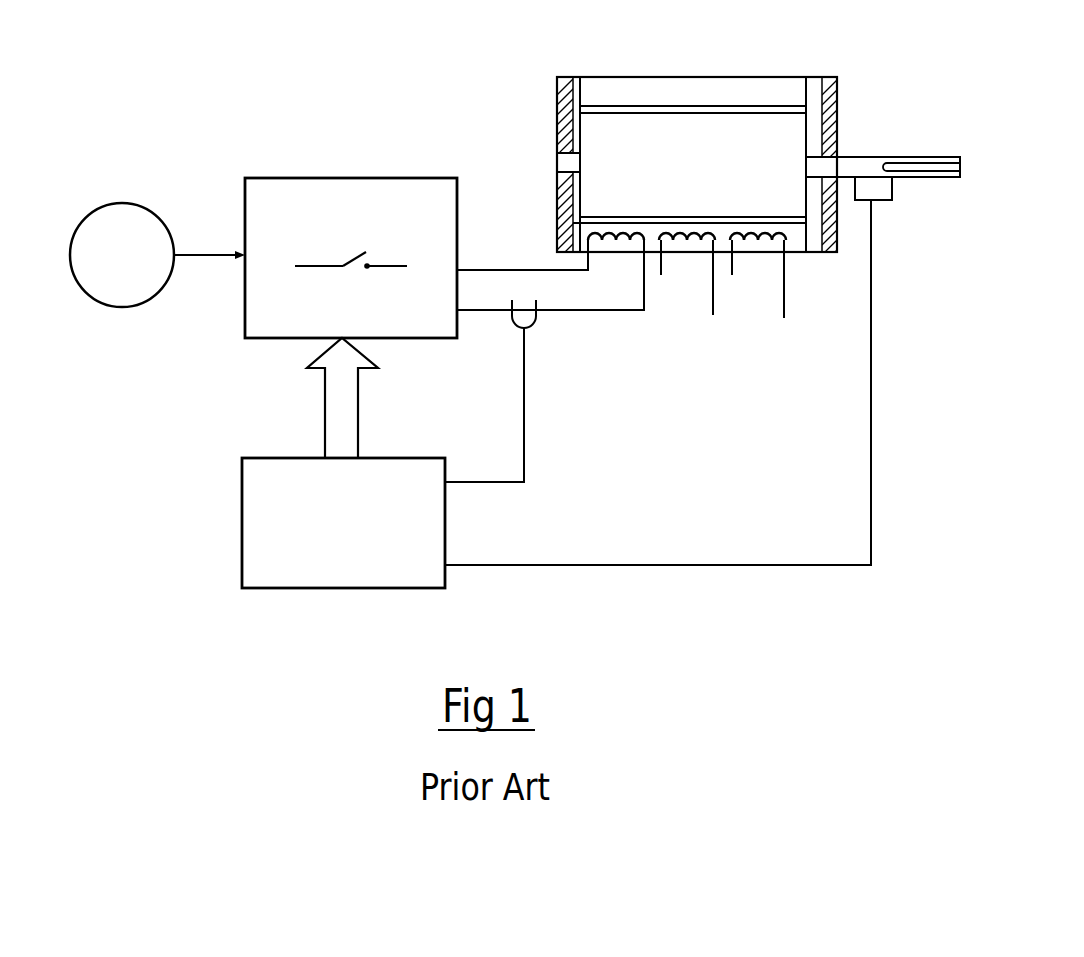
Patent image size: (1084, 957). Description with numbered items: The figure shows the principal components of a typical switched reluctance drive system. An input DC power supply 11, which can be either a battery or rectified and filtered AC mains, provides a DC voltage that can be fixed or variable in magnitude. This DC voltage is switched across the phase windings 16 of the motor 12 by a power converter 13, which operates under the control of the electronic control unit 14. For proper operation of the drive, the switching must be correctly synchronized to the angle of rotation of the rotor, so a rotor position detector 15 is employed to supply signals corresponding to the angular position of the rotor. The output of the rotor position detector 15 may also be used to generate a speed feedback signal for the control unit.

The input DC power supply 11 is at (120, 197).
The motor 12 is at (658, 77).
The power converter 13 is at (292, 176).
The electronic control unit 14 is at (240, 478).
The rotor position detector 15 is at (893, 192).
The phase windings 16 is at (760, 227).